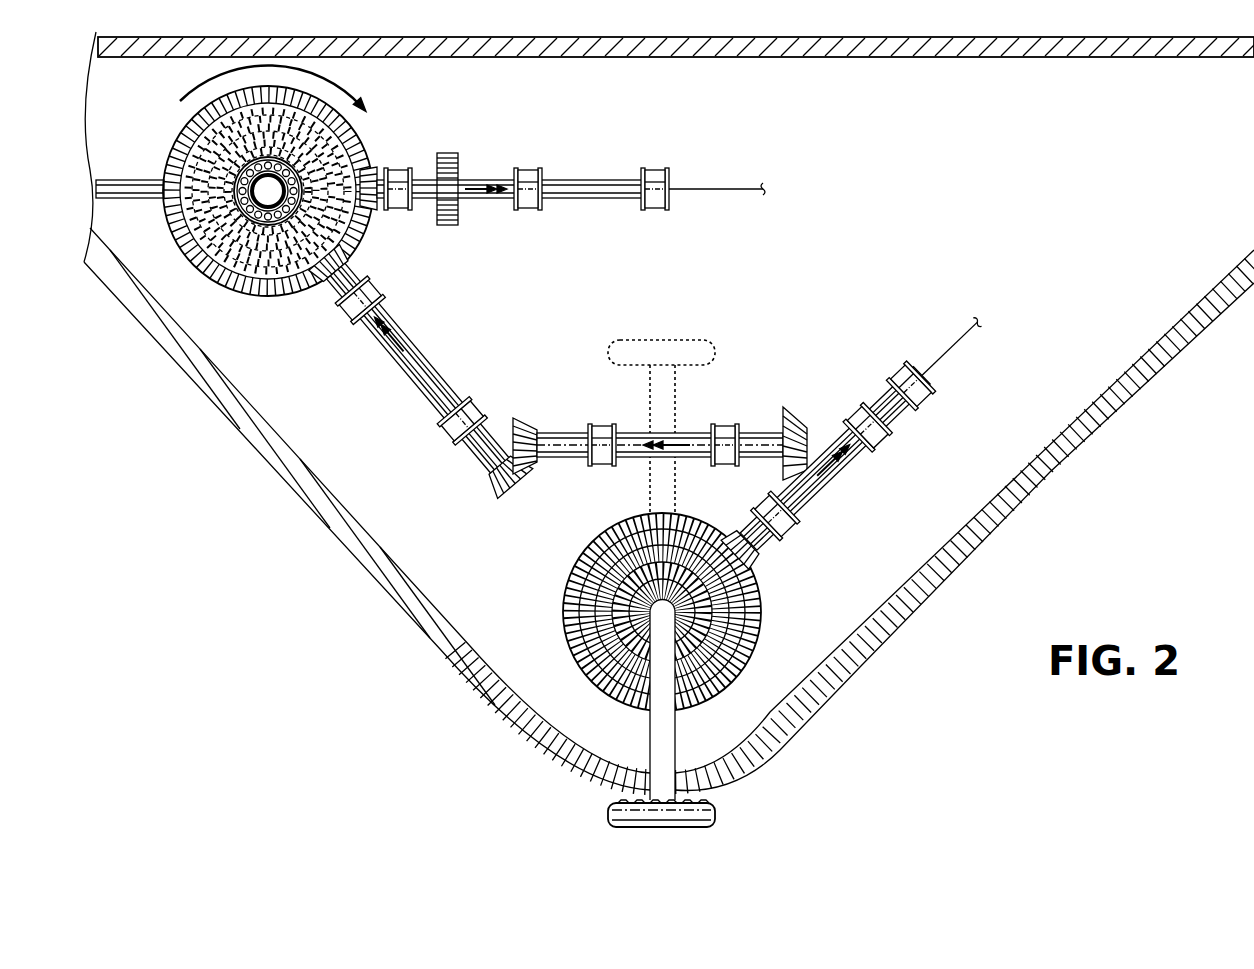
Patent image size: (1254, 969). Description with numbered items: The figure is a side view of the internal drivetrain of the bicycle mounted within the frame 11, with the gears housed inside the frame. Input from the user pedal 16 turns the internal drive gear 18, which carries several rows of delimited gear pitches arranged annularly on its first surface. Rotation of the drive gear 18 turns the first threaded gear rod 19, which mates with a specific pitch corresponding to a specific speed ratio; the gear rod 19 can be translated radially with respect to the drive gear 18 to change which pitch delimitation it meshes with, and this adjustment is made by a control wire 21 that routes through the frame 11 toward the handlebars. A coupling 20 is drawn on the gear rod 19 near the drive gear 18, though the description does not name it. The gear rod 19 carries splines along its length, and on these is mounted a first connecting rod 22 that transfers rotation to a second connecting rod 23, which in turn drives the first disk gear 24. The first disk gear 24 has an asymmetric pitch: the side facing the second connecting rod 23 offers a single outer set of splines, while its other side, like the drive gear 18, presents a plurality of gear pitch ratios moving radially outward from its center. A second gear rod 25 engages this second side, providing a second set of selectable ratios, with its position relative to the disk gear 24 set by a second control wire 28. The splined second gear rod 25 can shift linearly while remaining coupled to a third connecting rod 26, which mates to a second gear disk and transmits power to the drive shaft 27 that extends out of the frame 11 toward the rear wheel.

The frame 11 is at (946, 57).
The pedal 16 is at (666, 738).
The drive gear 18 is at (752, 600).
The first threaded gear rod 19 is at (856, 466).
The coupling 20 is at (772, 537).
The control wire 21 is at (946, 350).
The first connecting rod 22 is at (702, 422).
The second connecting rod 23 is at (442, 348).
The first disk gear 24 is at (268, 290).
The second gear rod 25 is at (578, 172).
The third connecting rod 26 is at (420, 176).
The drive shaft 27 is at (133, 186).
The second control wire 28 is at (718, 190).